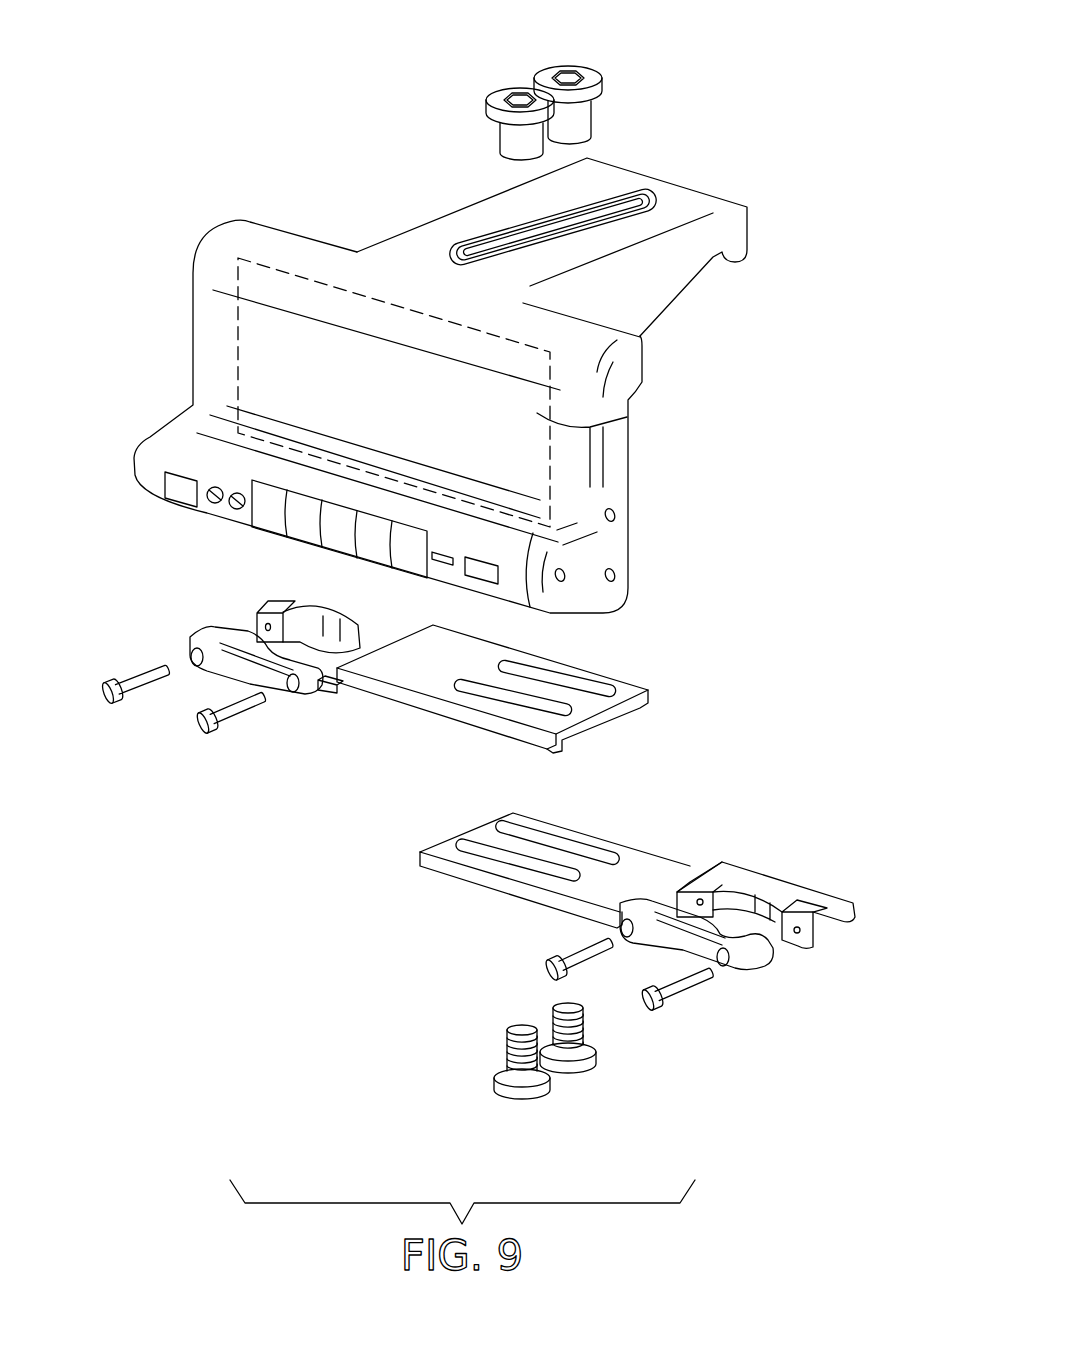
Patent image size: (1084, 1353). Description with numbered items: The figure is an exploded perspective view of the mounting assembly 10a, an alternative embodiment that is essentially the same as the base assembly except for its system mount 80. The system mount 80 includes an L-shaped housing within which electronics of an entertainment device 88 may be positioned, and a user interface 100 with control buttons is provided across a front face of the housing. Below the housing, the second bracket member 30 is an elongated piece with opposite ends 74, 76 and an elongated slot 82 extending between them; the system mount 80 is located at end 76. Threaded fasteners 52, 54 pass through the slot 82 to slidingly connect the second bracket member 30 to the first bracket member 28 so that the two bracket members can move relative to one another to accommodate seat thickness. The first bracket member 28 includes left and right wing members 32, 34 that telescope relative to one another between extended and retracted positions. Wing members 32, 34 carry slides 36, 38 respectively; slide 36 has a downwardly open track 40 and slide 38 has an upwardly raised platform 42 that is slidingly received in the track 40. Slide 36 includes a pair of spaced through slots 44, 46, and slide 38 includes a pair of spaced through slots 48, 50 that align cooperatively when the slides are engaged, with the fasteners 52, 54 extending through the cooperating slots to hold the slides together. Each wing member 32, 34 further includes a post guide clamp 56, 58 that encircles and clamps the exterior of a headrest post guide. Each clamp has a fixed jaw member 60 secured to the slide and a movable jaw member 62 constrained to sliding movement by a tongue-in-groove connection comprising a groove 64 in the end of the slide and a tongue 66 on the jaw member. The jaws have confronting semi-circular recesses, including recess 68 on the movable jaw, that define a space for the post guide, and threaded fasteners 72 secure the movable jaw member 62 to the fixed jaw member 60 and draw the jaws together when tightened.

The mounting assembly 10a is at (773, 138).
The first bracket member 28 is at (733, 768).
The second bracket member 30 is at (552, 213).
The left wing member 32 is at (514, 711).
The right wing member 34 is at (785, 841).
The slide 36 is at (483, 723).
The slide 38 is at (531, 861).
The downwardly open track 40 is at (620, 713).
The upwardly raised platform 42 is at (643, 858).
The through slot 44 is at (520, 698).
The through slot 46 is at (492, 676).
The through slot 48 is at (553, 870).
The through slot 50 is at (567, 842).
The fastener 52 is at (502, 92).
The fastener 54 is at (565, 72).
The post guide clamp 56 is at (525, 757).
The post guide clamp 58 is at (820, 878).
The fixed jaw member 60 is at (340, 606).
The movable jaw member 62 is at (220, 670).
The groove 64 is at (677, 903).
The tongue 66 is at (310, 625).
The semi-circular recess 68 is at (260, 640).
The threaded fastener 72 is at (132, 678).
The end 74 is at (690, 192).
The end 76 is at (540, 283).
The system mount 80 is at (630, 469).
The elongated slot 82 is at (625, 192).
The entertainment device electronics 88 is at (627, 418).
The user interface 100 is at (256, 538).